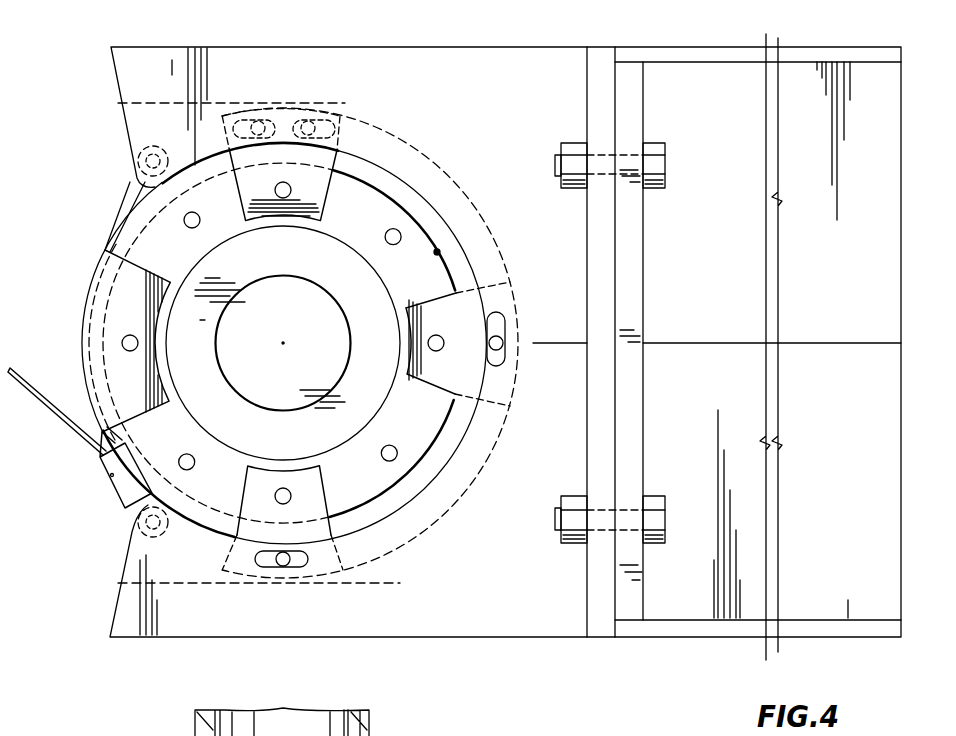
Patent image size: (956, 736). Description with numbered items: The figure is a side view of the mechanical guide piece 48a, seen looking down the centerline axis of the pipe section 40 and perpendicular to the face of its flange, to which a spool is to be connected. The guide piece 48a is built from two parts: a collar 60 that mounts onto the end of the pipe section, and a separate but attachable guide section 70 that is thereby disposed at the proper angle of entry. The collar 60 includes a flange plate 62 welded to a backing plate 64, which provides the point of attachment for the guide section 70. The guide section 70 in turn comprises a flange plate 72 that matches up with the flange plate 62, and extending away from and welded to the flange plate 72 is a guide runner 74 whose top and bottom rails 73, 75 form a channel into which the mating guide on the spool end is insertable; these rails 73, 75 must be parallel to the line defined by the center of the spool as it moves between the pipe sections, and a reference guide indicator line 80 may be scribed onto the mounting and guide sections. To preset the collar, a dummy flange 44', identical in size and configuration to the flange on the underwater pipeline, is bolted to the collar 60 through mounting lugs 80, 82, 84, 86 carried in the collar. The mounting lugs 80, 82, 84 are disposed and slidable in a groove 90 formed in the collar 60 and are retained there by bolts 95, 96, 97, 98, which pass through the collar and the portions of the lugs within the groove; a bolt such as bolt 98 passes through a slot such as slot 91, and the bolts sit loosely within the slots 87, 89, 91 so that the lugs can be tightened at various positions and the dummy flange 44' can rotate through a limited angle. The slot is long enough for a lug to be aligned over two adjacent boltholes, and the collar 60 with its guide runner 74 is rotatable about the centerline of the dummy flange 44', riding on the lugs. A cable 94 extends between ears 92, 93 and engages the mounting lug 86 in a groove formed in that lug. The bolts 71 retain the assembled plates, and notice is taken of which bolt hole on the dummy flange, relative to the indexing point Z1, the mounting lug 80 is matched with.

The pipe section 40 is at (382, 735).
The dummy flange 44' is at (276, 343).
The guide piece 48a is at (388, 41).
The collar 60 is at (469, 48).
The flange plate 62 is at (597, 252).
The backing plate 64 is at (570, 622).
The guide section 70 is at (652, 640).
The bolts 71 is at (610, 343).
The flange plate 72 is at (633, 250).
The rail 73 is at (688, 54).
The guide runner 74 is at (847, 603).
The rail 75 is at (730, 627).
The mounting lug 80 is at (310, 198).
The mounting lug 82 is at (447, 400).
The mounting lug 84 is at (252, 502).
The mounting lug 86 is at (120, 302).
The slot 87 is at (330, 128).
The slot 89 is at (262, 568).
The groove 90 is at (430, 516).
The slot 91 is at (498, 316).
The ear 92 is at (135, 523).
The ear 93 is at (127, 131).
The cable 94 is at (100, 440).
The bolt 95 is at (308, 122).
The bolt 96 is at (258, 122).
The bolt 97 is at (283, 564).
The bolt 98 is at (498, 343).
The indexing point Z1 is at (437, 252).